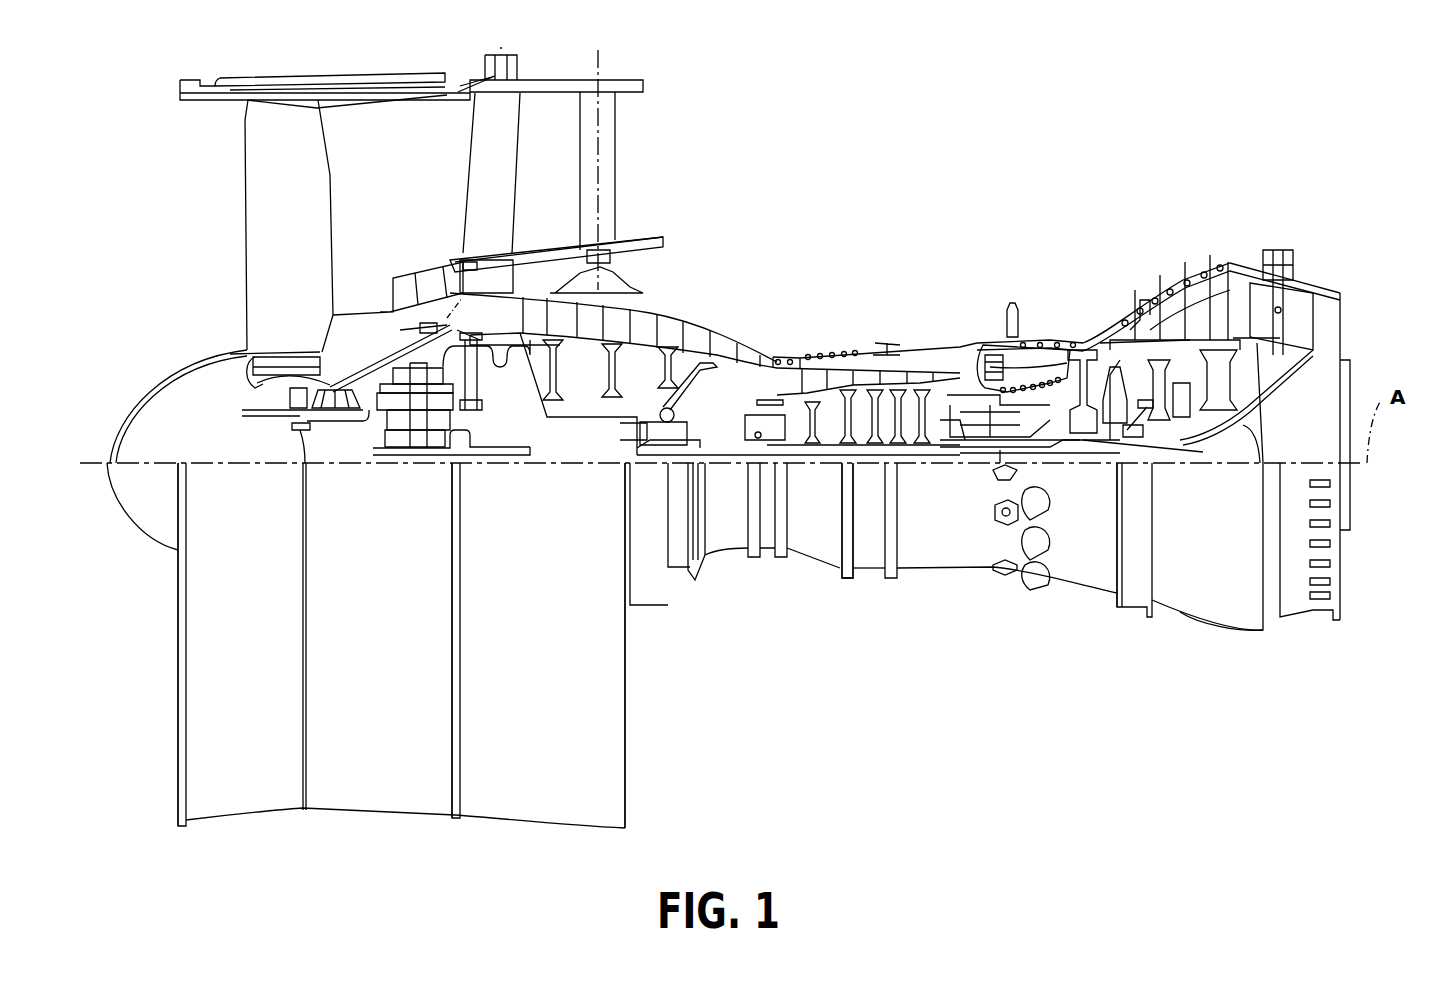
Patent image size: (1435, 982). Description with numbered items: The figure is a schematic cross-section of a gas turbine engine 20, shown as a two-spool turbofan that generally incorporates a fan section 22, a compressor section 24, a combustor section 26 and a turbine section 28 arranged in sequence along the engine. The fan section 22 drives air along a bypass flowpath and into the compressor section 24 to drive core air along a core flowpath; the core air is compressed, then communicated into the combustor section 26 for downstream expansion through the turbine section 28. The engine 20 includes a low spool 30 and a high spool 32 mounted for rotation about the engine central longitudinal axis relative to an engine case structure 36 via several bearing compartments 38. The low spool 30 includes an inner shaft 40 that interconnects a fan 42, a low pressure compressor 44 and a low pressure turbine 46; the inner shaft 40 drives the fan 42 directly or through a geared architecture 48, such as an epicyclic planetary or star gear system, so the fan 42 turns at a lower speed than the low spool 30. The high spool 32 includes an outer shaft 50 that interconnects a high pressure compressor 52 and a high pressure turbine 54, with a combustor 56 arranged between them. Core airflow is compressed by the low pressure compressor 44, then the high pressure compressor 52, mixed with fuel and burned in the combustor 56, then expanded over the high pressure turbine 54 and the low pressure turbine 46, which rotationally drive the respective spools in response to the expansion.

The gas turbine engine 20 is at (1085, 142).
The fan section 22 is at (458, 53).
The compressor section 24 is at (905, 207).
The combustor section 26 is at (1030, 207).
The turbine section 28 is at (1280, 207).
The low spool 30 is at (705, 422).
The high spool 32 is at (928, 418).
The engine case structure 36 is at (870, 578).
The bearing compartments 38 is at (488, 538).
The inner shaft 40 is at (1058, 455).
The fan 42 is at (300, 250).
The low pressure compressor 44 is at (655, 318).
The low pressure turbine 46 is at (1193, 300).
The geared architecture 48 is at (416, 418).
The outer shaft 50 is at (1055, 430).
The high pressure compressor 52 is at (795, 380).
The high pressure turbine 54 is at (1092, 350).
The combustor 56 is at (1022, 375).